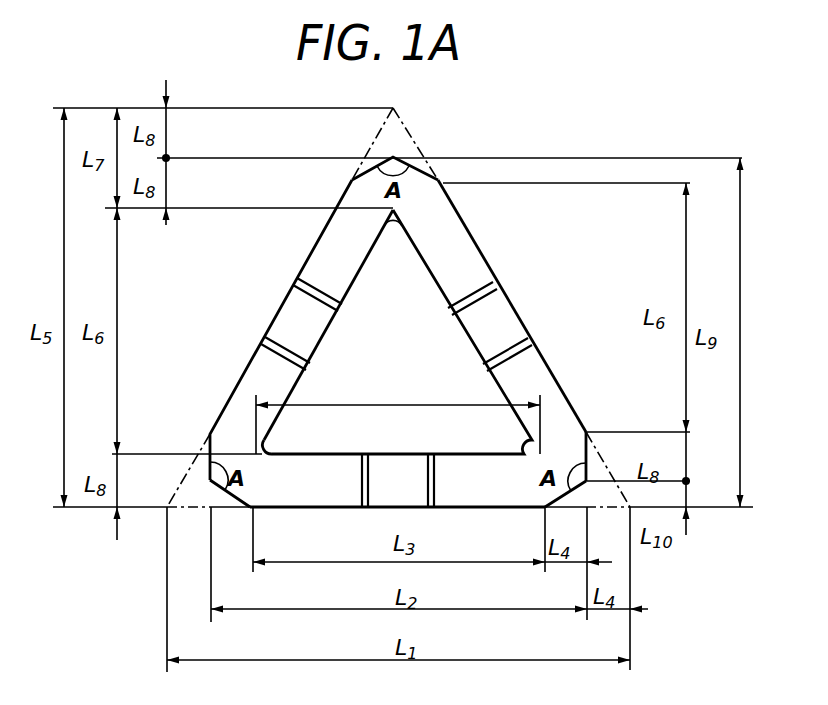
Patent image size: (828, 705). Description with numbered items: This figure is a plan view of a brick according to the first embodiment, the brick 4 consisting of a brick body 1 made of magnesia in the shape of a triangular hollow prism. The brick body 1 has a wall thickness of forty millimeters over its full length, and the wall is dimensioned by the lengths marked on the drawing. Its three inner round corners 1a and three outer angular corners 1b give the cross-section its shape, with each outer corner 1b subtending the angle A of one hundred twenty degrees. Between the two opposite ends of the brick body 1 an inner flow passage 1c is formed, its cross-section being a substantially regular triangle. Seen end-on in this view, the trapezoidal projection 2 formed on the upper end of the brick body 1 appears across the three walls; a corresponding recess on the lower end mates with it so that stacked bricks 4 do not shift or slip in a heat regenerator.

The brick body 1 is at (398, 347).
The inner round corner 1a is at (277, 448).
The outer angular corner 1b is at (227, 497).
The inner flow passage 1c is at (365, 292).
The trapezoidal projection 2 is at (285, 326).
The brick 4 is at (509, 278).